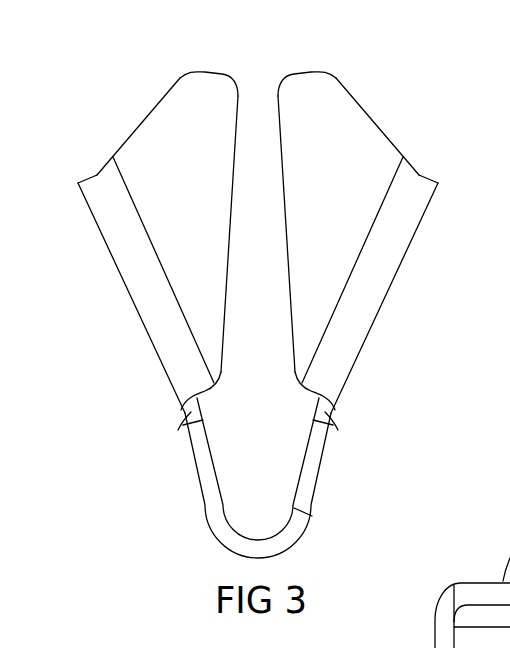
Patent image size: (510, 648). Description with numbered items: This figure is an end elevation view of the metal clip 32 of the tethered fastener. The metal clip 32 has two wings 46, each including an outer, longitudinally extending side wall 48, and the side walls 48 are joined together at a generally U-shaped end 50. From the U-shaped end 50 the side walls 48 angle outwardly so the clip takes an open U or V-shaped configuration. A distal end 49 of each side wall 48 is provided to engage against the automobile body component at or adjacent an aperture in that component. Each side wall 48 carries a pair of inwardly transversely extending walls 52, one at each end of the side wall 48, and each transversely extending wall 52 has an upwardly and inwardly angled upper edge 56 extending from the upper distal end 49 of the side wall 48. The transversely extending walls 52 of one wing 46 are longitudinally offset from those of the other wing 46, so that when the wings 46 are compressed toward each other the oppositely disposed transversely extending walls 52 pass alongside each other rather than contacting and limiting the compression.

The metal clip 32 is at (388, 97).
The wing 46 is at (113, 261).
The side wall 48 is at (185, 430).
The distal end 49 is at (88, 176).
The U-shaped end 50 is at (283, 543).
The transversely extending wall 52 is at (212, 87).
The upper edge 56 is at (140, 120).